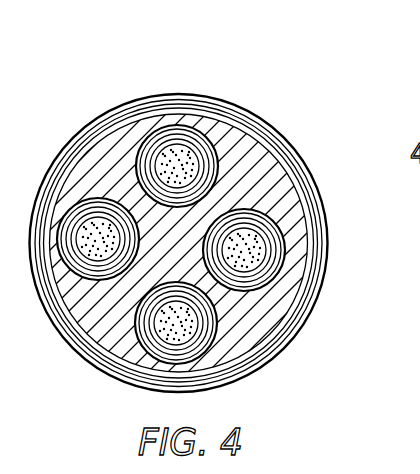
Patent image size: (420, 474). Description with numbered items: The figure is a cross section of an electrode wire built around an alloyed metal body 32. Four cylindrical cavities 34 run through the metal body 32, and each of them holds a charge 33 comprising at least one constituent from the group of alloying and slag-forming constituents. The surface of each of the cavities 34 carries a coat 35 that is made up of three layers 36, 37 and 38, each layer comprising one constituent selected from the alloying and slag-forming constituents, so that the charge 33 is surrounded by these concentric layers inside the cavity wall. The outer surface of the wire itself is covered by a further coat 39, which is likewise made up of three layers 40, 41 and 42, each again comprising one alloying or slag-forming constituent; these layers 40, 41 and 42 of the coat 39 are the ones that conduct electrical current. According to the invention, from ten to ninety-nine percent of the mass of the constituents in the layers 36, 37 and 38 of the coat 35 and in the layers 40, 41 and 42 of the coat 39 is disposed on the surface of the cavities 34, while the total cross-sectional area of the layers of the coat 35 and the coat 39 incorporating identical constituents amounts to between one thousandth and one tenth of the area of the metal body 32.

The alloyed metal body 32 is at (285, 211).
The charge 33 is at (166, 160).
The cylindrical cavities 34 is at (186, 140).
The coat 35 is at (206, 130).
The layer 36 is at (243, 141).
The layer 37 is at (234, 178).
The layer 38 is at (222, 179).
The coat 39 is at (307, 265).
The layer 40 is at (63, 147).
The layer 41 is at (85, 138).
The layer 42 is at (112, 122).